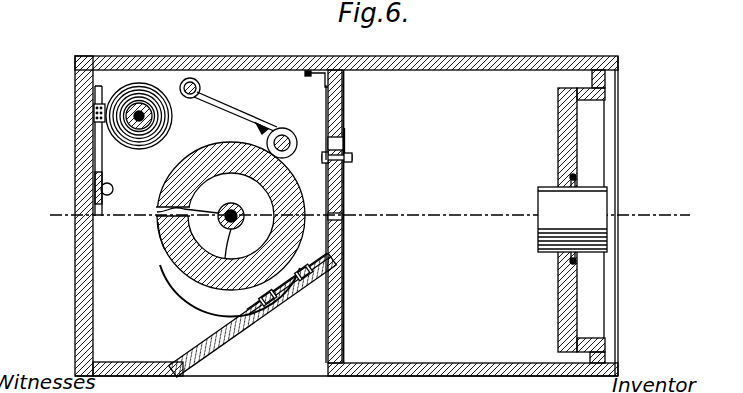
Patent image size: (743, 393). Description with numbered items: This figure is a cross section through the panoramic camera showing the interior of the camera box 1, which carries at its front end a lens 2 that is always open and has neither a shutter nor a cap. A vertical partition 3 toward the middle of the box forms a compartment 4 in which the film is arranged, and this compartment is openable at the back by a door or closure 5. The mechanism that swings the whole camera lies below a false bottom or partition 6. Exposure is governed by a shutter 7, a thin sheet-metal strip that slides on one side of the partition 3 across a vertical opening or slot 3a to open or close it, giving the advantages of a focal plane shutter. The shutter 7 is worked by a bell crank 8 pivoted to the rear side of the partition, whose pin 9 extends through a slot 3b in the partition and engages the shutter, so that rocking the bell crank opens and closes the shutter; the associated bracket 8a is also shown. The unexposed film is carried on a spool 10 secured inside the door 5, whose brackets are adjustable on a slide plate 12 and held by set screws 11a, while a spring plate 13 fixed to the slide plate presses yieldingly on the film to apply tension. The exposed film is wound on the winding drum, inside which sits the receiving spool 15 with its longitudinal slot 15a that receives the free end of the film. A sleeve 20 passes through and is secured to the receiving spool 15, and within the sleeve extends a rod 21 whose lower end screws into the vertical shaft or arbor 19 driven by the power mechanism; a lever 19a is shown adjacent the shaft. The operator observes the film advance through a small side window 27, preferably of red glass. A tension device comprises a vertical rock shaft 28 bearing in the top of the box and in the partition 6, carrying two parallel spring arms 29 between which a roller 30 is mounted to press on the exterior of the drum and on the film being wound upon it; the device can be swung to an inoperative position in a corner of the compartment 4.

The camera box 1 is at (533, 62).
The lens 2 is at (538, 219).
The vertical partition 3 is at (344, 262).
The vertical opening or slot 3a is at (344, 218).
The slot in partition 3b is at (345, 145).
The compartment 4 is at (125, 325).
The door or closure 5 is at (54, 283).
The false bottom or partition 6 is at (243, 92).
The shutter 7 is at (344, 188).
The bell crank 8 is at (326, 107).
The bracket 8a is at (311, 71).
The pin 9 is at (350, 161).
The spool 10 is at (141, 110).
The set screws 11a is at (111, 187).
The slide plate 12 is at (100, 190).
The spring plate 13 is at (76, 143).
The receiving spool 15 is at (222, 224).
The longitudinal slot 15a is at (223, 289).
The vertical shaft or arbor 19 is at (178, 270).
The lever 19a is at (157, 213).
The sleeve 20 is at (245, 217).
The rod 21 is at (239, 244).
The side opening or window 27 is at (298, 301).
The vertical rock shaft 28 is at (190, 98).
The spring arms 29 is at (246, 117).
The roller 30 is at (282, 130).